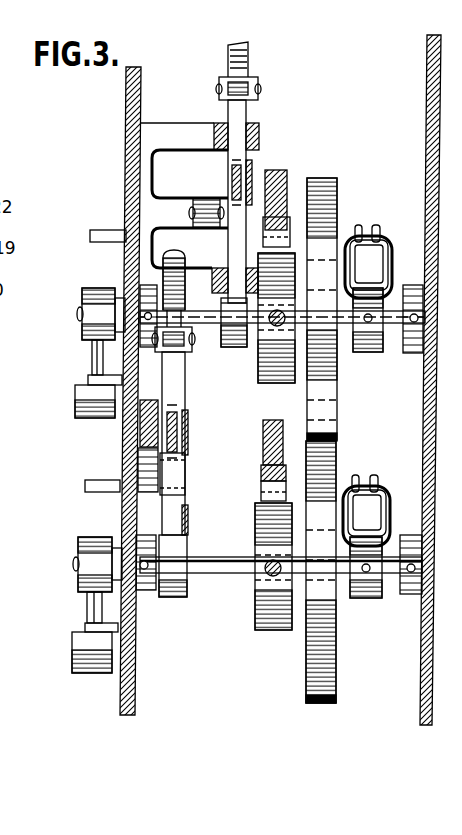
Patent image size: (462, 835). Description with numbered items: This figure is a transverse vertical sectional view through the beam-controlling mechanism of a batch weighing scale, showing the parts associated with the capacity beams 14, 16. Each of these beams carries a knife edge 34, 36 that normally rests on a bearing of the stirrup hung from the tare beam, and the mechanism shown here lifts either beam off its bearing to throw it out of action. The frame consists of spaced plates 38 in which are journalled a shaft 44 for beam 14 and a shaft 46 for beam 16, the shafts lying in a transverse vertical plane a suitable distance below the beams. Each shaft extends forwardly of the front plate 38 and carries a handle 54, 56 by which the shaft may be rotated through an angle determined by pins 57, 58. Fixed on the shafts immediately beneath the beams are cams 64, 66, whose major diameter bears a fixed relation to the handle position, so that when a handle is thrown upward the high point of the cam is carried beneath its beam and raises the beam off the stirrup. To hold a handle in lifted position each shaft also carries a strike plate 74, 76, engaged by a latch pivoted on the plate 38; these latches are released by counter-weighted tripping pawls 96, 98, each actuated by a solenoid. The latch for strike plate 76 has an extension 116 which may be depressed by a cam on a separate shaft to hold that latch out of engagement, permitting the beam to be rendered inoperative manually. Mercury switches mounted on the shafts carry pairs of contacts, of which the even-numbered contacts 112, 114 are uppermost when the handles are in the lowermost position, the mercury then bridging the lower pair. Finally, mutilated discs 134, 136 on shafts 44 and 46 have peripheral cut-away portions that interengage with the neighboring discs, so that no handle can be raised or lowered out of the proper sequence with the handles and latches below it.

The capacity beam 14 is at (284, 170).
The capacity beam 16 is at (263, 444).
The knife edge 34 is at (290, 223).
The knife edge 36 is at (262, 478).
The spaced plates 38 is at (132, 97).
The shaft 44 is at (345, 333).
The shaft 46 is at (340, 575).
The handle 54 is at (95, 355).
The handle 56 is at (92, 610).
The pin 57 is at (118, 232).
The pin 58 is at (102, 389).
The cam 64 is at (268, 358).
The cam 66 is at (265, 592).
The strike plate 74 is at (226, 334).
The strike plate 76 is at (177, 548).
The tripping pawl 96 is at (232, 178).
The tripping pawl 98 is at (180, 432).
The contact 112 is at (384, 273).
The contact 114 is at (382, 520).
The extension 116 is at (146, 402).
The disc 134 is at (328, 178).
The disc 136 is at (306, 651).